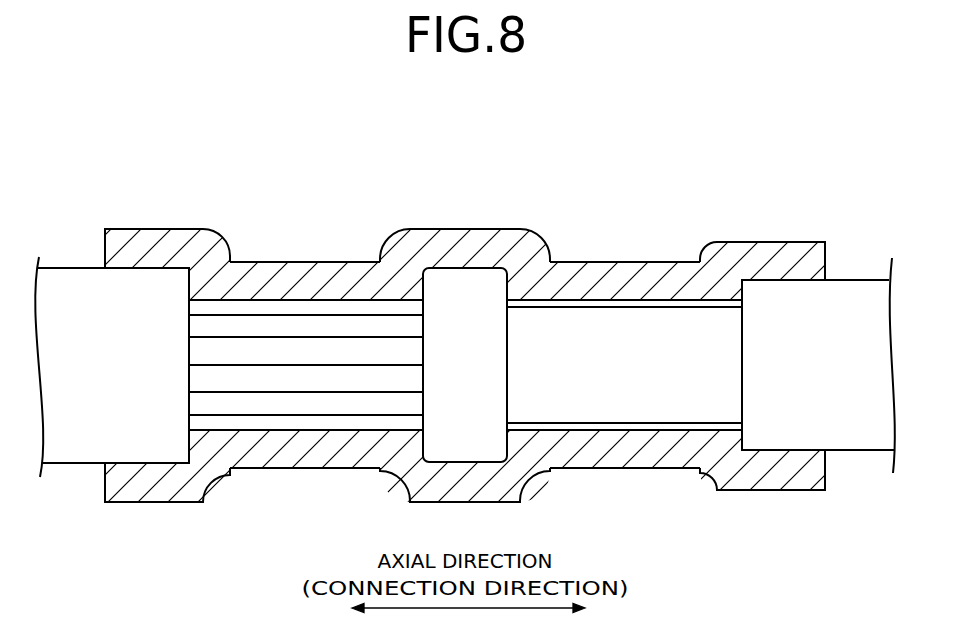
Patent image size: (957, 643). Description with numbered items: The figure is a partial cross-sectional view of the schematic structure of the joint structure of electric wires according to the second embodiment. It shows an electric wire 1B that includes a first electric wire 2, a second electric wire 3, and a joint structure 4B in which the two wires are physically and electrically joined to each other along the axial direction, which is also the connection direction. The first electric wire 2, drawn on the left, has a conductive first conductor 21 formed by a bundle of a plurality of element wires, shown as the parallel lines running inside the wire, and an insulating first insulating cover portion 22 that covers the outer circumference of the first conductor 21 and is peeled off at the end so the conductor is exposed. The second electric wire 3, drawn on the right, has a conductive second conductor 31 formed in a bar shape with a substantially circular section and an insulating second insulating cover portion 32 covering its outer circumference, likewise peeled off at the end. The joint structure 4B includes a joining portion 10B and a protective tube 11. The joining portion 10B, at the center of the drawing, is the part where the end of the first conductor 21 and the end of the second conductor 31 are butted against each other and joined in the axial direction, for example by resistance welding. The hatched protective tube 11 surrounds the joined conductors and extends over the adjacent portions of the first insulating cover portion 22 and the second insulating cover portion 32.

The electric wire 1B is at (465, 286).
The first electric wire 2 is at (264, 322).
The first conductor 21 is at (306, 325).
The first insulating cover portion 22 is at (163, 260).
The protective tube 11 is at (334, 275).
The joint structure 4B is at (525, 183).
The joining portion 10B is at (418, 266).
The second electric wire 3 is at (666, 320).
The second conductor 31 is at (657, 298).
The second insulating cover portion 32 is at (762, 339).